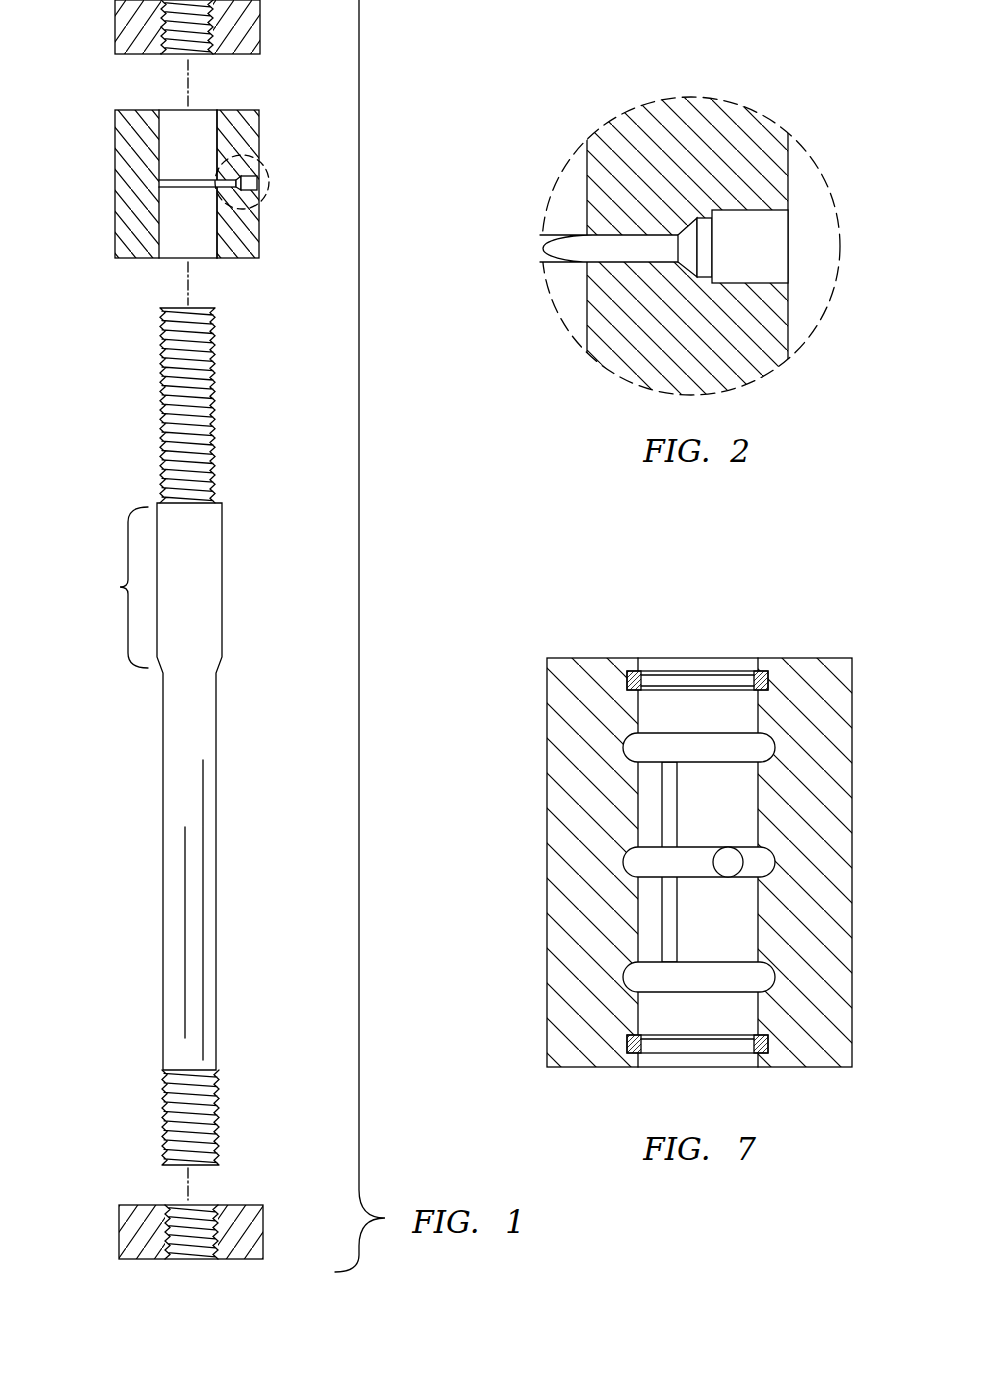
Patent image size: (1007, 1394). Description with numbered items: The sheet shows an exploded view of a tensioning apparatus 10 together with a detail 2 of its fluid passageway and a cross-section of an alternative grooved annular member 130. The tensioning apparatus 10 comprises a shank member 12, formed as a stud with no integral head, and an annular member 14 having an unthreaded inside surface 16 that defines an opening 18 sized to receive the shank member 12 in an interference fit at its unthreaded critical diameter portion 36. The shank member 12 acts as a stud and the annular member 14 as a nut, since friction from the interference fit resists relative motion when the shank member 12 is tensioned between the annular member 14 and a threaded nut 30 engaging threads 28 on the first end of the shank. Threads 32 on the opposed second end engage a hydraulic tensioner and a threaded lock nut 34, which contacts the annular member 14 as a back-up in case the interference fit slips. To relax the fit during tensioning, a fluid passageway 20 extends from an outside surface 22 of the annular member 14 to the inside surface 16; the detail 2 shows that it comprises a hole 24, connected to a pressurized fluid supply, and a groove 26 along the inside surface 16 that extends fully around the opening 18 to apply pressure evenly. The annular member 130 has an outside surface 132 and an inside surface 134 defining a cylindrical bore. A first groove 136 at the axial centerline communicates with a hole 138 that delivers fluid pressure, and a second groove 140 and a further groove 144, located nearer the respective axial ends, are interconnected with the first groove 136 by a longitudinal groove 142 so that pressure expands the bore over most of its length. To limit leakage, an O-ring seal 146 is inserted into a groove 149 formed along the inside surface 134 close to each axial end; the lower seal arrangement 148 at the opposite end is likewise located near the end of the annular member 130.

In FIG. 1, the tensioning apparatus 10 is at (72, 424).
In FIG. 1, the shank member 12 is at (163, 761).
In FIG. 1, the annular member 14 is at (115, 205).
In FIG. 1, the inside surface 16 is at (163, 138).
In FIG. 1, the opening 18 is at (188, 240).
In FIG. 1, the fluid passageway 20 is at (276, 209).
In FIG. 1, the outside surface 22 is at (259, 126).
In FIG. 2, the hole 24 is at (750, 242).
In FIG. 1, the groove 26 is at (187, 180).
In FIG. 2, the groove 26 is at (593, 247).
In FIG. 1, the threads 28 is at (165, 1120).
In FIG. 1, the threaded nut 30 is at (119, 1231).
In FIG. 1, the threads 32 is at (160, 377).
In FIG. 1, the threaded lock nut 34 is at (115, 26).
In FIG. 1, the critical diameter portion 36 is at (112, 587).
In FIG. 1, the detail region shown in FIG. 2 is at (268, 173).
In FIG. 7, the annular member 130 is at (512, 602).
In FIG. 7, the outside surface 132 is at (547, 930).
In FIG. 7, the inside surface 134 is at (710, 669).
In FIG. 7, the first groove 136 is at (695, 845).
In FIG. 7, the hole 138 is at (713, 862).
In FIG. 7, the second groove 140 is at (697, 730).
In FIG. 7, the longitudinal groove 142 is at (658, 802).
In FIG. 7, the groove 144 is at (693, 993).
In FIG. 7, the seal 146 is at (725, 684).
In FIG. 7, the lower seal assembly 148 is at (675, 1055).
In FIG. 7, the groove 149 is at (683, 671).